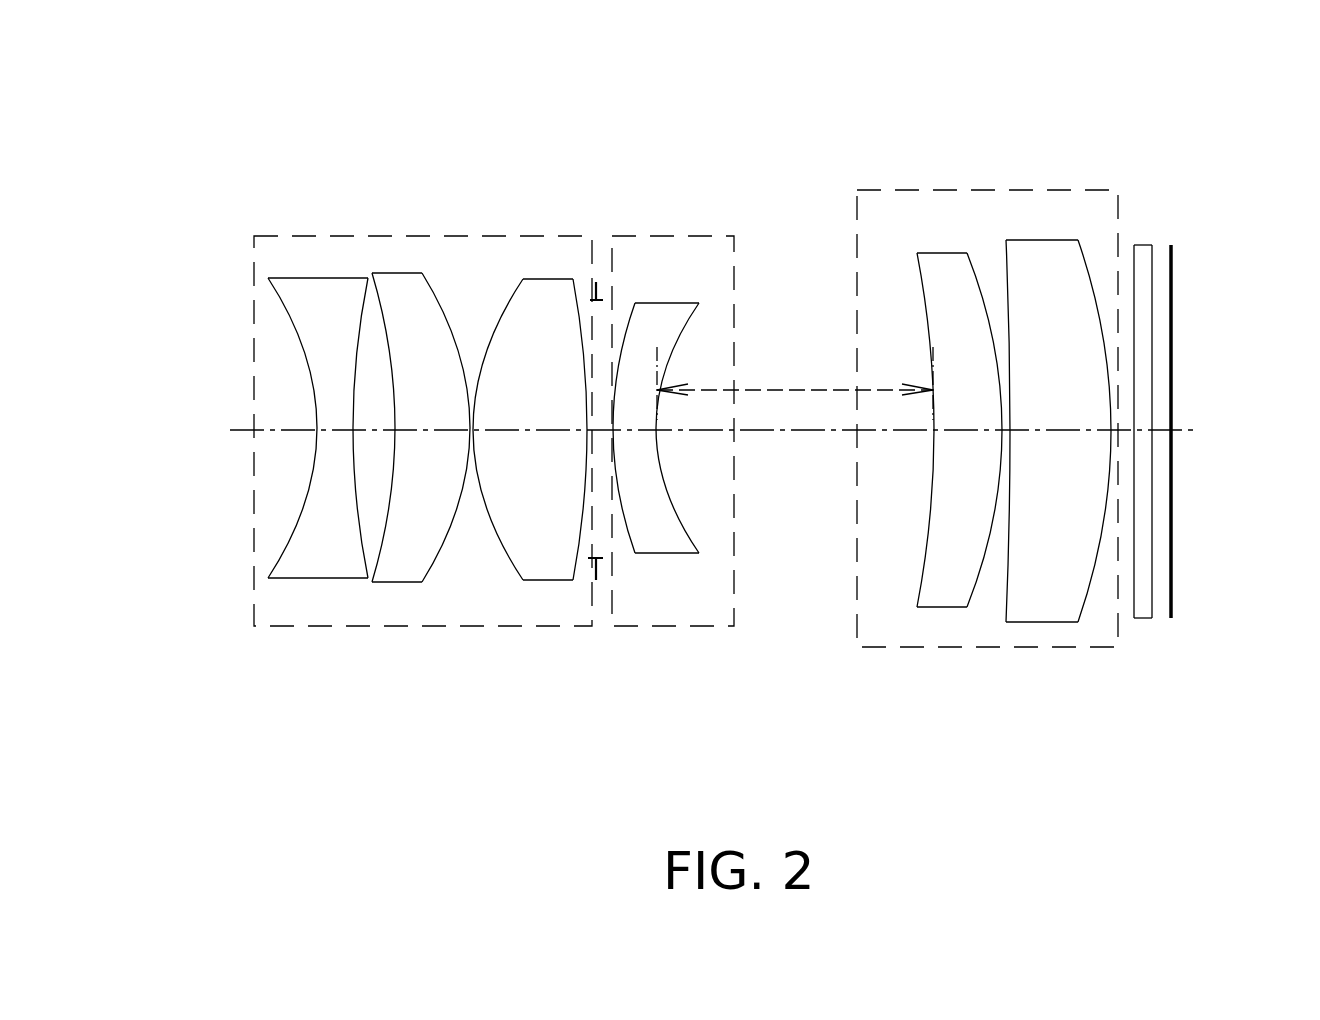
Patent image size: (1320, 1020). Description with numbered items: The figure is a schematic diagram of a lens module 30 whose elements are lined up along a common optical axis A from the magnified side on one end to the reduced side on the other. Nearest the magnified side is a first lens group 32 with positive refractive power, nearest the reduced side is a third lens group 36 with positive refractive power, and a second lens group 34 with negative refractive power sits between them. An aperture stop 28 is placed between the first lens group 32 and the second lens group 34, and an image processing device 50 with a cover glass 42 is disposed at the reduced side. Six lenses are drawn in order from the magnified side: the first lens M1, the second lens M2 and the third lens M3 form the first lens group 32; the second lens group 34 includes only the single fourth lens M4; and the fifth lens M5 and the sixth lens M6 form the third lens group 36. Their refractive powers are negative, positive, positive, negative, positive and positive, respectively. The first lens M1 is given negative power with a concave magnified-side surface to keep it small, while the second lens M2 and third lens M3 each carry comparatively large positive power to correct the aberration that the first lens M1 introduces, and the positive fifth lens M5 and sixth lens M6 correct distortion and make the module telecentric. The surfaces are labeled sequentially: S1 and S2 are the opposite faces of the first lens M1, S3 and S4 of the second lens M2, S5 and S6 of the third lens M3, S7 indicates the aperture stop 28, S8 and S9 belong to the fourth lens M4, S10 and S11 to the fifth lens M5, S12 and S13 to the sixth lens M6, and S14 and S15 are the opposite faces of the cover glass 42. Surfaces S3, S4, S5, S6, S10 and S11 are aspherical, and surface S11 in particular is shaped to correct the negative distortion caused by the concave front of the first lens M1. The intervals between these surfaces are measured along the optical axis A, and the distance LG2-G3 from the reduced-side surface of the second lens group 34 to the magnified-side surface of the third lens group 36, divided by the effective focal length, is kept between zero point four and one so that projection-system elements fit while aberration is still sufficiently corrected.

The lens module 30 is at (208, 83).
The first lens group 32 is at (392, 232).
The second lens group 34 is at (667, 233).
The third lens group 36 is at (990, 187).
The aperture stop 28 is at (605, 428).
The cover glass 42 is at (1195, 424).
The image processing device 50 is at (1173, 290).
The optical axis A is at (787, 432).
The first lens M1 is at (268, 415).
The second lens M2 is at (447, 432).
The third lens M3 is at (540, 418).
The fourth lens M4 is at (707, 446).
The fifth lens M5 is at (907, 424).
The sixth lens M6 is at (1066, 421).
The surface S1 is at (312, 495).
The surface S2 is at (357, 455).
The surface S3 is at (388, 500).
The surface S4 is at (440, 548).
The surface S5 is at (500, 540).
The surface S6 is at (582, 560).
The surface S7 is at (592, 562).
The surface S8 is at (627, 530).
The surface S9 is at (682, 510).
The surface S10 is at (918, 563).
The surface S11 is at (977, 594).
The surface S12 is at (1003, 567).
The surface S13 is at (1093, 570).
The surface S14 is at (1133, 583).
The surface S15 is at (1152, 600).
The distance LG2-G3 is at (795, 383).